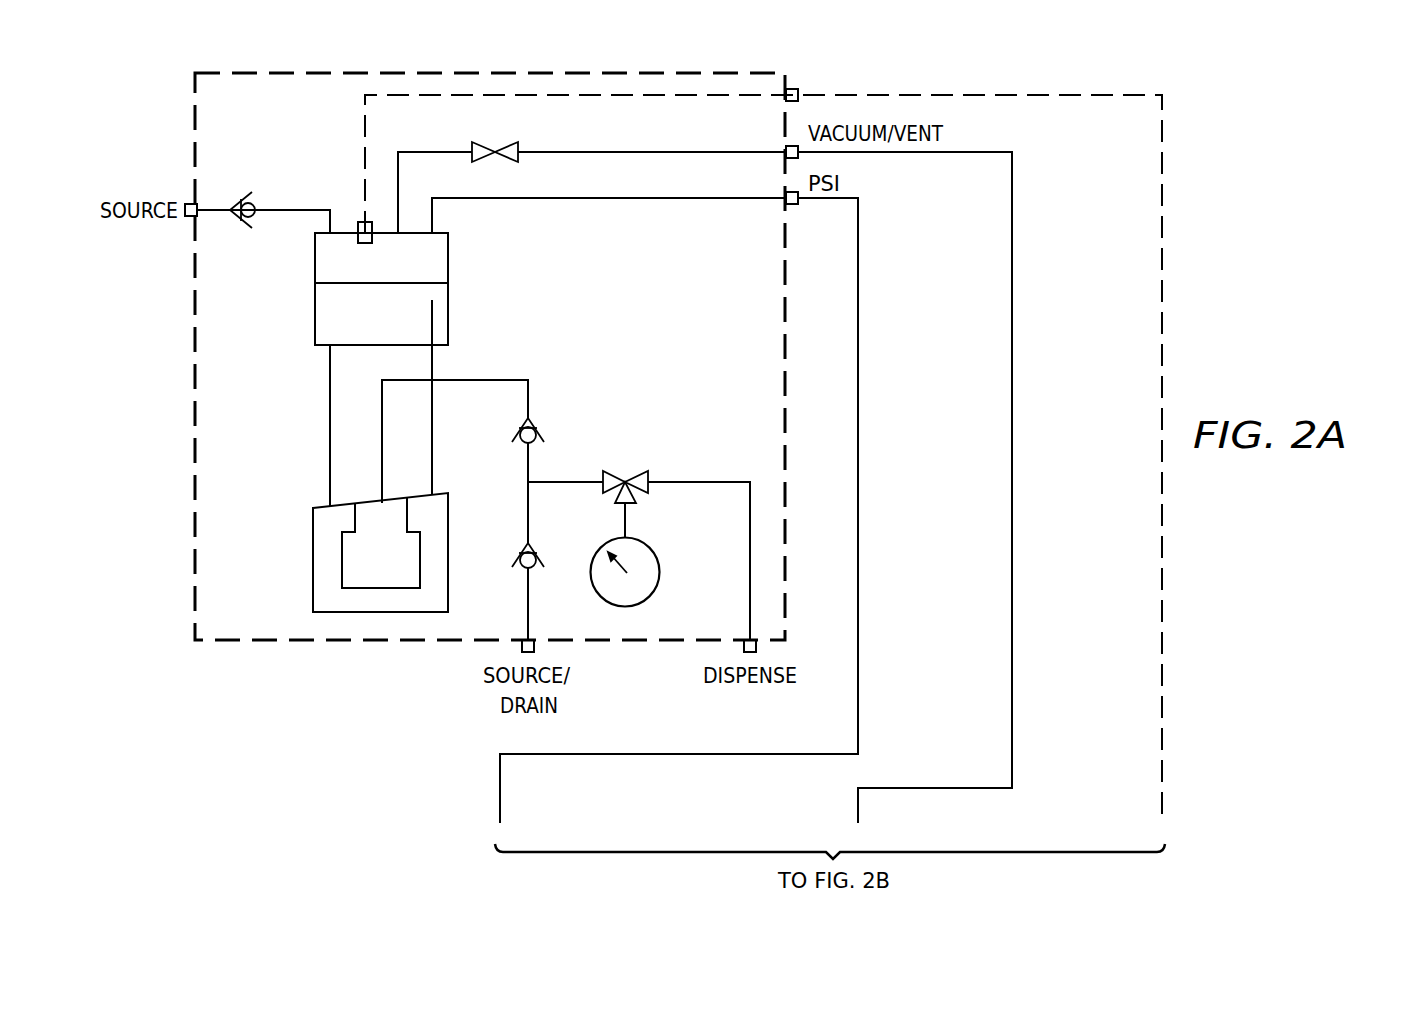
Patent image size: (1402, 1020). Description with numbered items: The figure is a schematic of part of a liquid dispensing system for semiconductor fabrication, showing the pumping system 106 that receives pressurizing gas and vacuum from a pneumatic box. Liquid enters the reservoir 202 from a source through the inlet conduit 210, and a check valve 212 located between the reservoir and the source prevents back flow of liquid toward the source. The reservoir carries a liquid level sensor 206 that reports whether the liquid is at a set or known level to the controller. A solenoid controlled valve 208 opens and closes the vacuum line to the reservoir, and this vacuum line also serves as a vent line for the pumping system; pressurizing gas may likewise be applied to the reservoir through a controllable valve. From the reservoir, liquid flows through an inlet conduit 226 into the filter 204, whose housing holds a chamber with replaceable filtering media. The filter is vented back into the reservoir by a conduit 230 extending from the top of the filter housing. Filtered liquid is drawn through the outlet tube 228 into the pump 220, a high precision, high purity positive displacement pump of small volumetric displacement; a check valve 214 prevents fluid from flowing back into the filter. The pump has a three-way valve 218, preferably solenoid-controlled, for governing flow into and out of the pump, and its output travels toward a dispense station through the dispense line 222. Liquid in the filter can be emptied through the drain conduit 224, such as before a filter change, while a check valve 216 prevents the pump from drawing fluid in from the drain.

The pumping system 106 is at (457, 72).
The reservoir 202 is at (313, 307).
The filter 204 is at (313, 560).
The liquid level sensor 206 is at (357, 225).
The solenoid controlled valve 208 is at (502, 163).
The inlet conduit 210 is at (288, 208).
The check valve 212 is at (236, 226).
The check valve 214 is at (540, 432).
The check valve 216 is at (520, 557).
The three-way valve 218 is at (623, 472).
The pump 220 is at (660, 572).
The dispense line 222 is at (722, 481).
The drain conduit 224 is at (530, 600).
The inlet conduit 226 is at (330, 427).
The outlet tube 228 is at (492, 379).
The conduit 230 is at (434, 436).